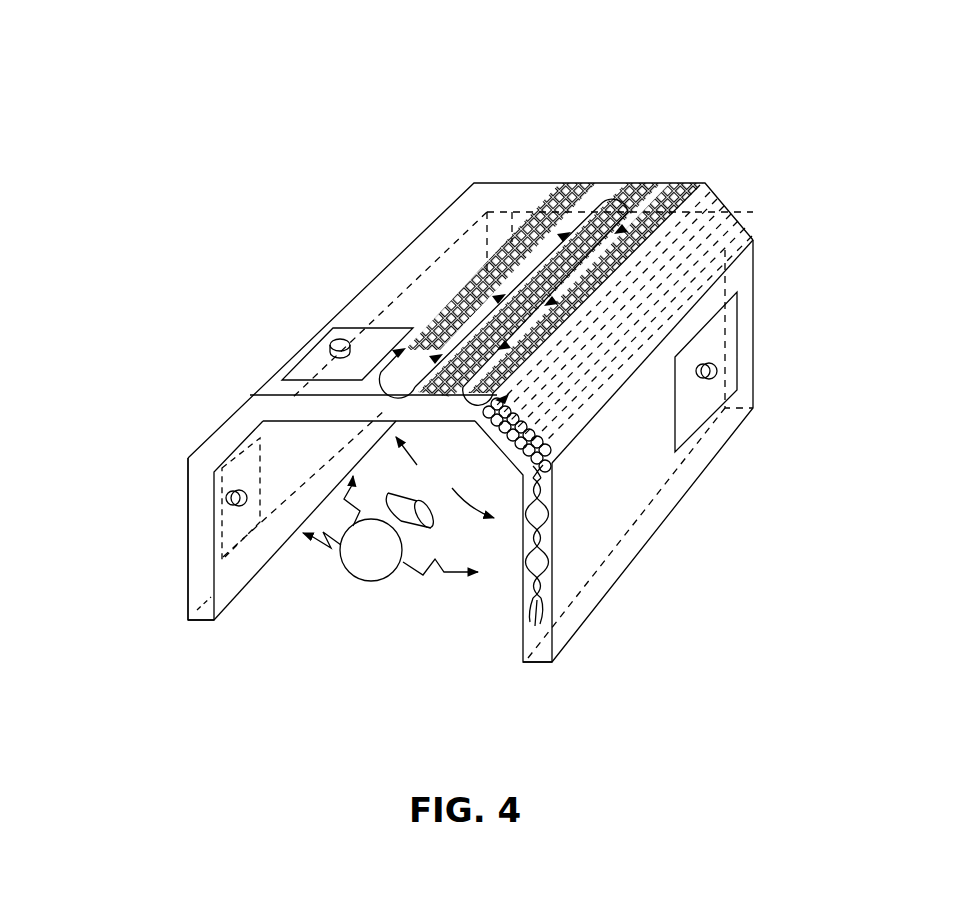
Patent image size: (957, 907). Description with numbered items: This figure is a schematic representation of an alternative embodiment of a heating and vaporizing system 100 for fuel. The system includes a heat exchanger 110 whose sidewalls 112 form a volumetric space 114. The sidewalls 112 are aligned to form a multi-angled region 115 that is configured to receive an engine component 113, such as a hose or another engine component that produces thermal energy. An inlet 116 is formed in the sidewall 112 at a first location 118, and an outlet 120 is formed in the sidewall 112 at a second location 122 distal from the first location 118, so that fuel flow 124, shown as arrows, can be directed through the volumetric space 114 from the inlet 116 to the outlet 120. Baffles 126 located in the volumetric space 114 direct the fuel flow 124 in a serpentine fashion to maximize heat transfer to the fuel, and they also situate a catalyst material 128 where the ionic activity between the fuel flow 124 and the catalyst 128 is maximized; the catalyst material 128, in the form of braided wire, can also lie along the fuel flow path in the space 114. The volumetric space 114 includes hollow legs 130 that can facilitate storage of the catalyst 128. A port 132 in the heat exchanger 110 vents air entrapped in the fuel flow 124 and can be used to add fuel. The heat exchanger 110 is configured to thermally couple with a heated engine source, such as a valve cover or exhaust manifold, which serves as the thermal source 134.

The heating and vaporizing system 100 is at (470, 70).
The heat exchanger 110 is at (522, 183).
The sidewalls 112 is at (203, 560).
The engine component 113 is at (397, 583).
The volumetric space 114 is at (238, 418).
The multi-angled region 115 is at (445, 477).
The inlet 116 is at (188, 458).
The first location 118 is at (172, 522).
The outlet 120 is at (718, 373).
The second location 122 is at (745, 435).
The fuel flow 124 is at (612, 192).
The baffles 126 is at (517, 265).
The catalyst material 128 is at (713, 222).
The legs 130 is at (200, 583).
The port 132 is at (332, 338).
The thermal source 134 is at (353, 573).